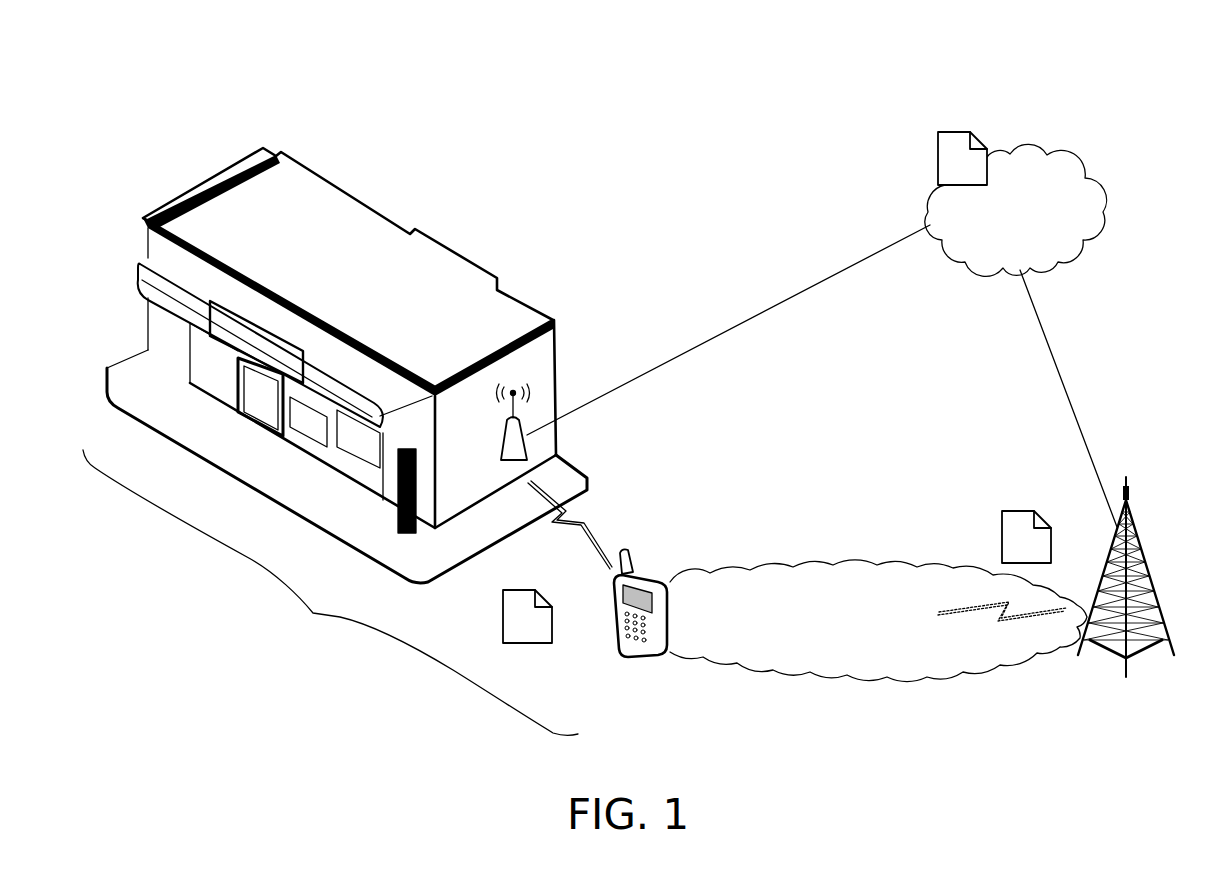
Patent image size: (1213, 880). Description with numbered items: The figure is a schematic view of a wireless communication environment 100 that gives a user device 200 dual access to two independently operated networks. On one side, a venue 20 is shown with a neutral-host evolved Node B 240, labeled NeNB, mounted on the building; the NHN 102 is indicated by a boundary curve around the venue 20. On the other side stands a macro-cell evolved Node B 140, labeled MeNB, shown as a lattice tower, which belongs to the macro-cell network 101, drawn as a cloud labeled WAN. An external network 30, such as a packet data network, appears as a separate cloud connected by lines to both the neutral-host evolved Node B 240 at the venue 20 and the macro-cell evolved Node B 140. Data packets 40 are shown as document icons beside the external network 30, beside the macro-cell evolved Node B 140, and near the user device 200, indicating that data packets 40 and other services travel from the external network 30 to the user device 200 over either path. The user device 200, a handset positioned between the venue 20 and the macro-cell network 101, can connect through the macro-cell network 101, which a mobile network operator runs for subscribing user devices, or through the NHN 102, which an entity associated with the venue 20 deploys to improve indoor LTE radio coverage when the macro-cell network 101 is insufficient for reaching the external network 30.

The wireless communication environment 100 is at (352, 66).
The venue 20 is at (433, 238).
The neutral host eNodeB (NeNB) 240 is at (527, 438).
The data packets 40 is at (960, 131).
The user device 200 is at (647, 574).
The macro-cell network (MCN) 101 is at (857, 563).
The external network 30 is at (1017, 153).
The macro-cell evolved Node B (MeNB) 140 is at (1128, 497).
The neutral host network (NHN) 102 is at (330, 592).